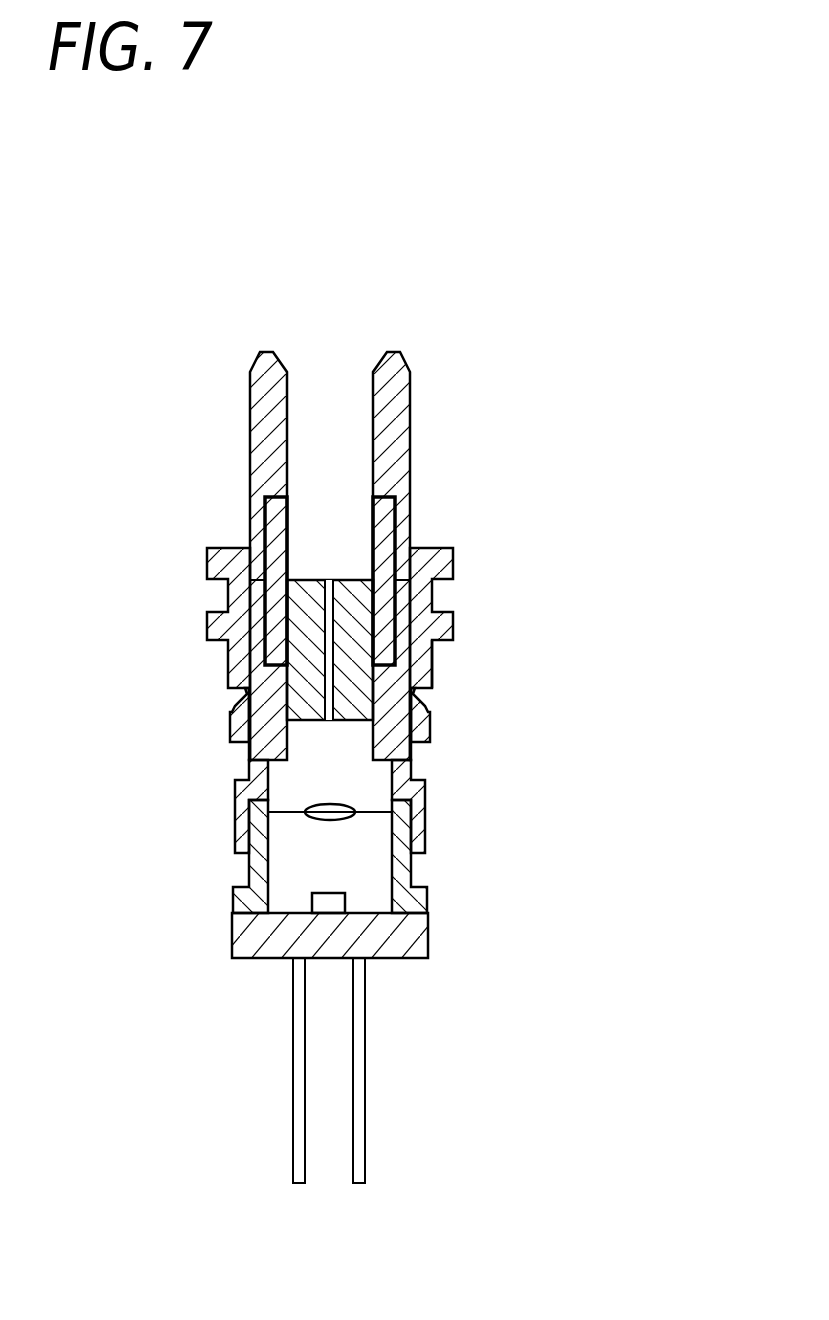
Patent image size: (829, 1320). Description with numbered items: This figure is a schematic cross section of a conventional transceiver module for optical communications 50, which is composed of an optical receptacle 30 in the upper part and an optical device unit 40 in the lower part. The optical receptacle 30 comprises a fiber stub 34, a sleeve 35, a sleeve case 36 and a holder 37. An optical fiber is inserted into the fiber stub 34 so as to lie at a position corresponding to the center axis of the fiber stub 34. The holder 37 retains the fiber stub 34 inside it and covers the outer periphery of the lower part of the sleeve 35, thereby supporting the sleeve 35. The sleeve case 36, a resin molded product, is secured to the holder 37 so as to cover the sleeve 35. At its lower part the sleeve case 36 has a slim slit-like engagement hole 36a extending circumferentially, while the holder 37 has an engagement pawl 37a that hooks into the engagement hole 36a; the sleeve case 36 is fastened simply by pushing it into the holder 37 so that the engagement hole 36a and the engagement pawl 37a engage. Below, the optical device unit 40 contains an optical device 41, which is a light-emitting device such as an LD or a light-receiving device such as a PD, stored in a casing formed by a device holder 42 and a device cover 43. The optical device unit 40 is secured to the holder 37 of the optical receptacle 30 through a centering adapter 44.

The transceiver module for optical communications 50 is at (573, 232).
The optical receptacle 30 is at (680, 756).
The optical device unit 40 is at (680, 761).
The fiber stub 34 is at (352, 592).
The sleeve 35 is at (382, 537).
The sleeve case 36 is at (392, 393).
The engagement hole 36a is at (433, 668).
The holder 37 is at (415, 747).
The engagement pawl 37a is at (423, 702).
The optical device 41 is at (328, 903).
The device holder 42 is at (400, 945).
The device cover 43 is at (418, 840).
The centering adapter 44 is at (418, 807).